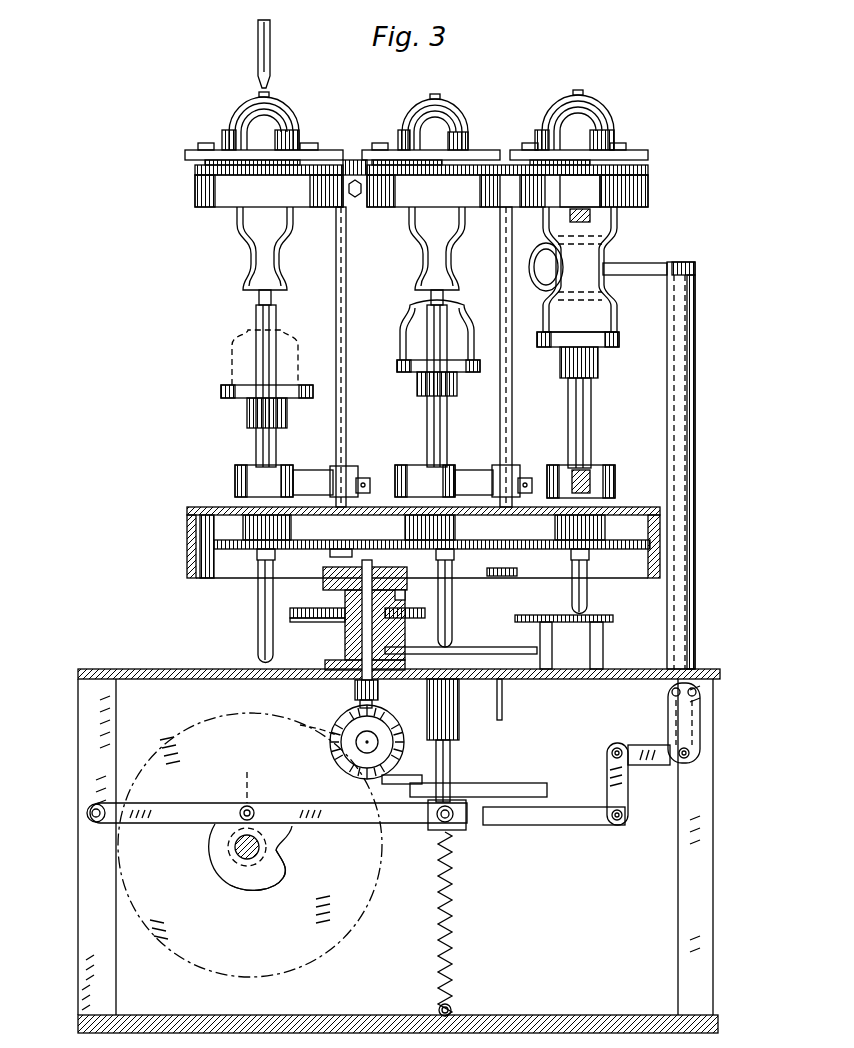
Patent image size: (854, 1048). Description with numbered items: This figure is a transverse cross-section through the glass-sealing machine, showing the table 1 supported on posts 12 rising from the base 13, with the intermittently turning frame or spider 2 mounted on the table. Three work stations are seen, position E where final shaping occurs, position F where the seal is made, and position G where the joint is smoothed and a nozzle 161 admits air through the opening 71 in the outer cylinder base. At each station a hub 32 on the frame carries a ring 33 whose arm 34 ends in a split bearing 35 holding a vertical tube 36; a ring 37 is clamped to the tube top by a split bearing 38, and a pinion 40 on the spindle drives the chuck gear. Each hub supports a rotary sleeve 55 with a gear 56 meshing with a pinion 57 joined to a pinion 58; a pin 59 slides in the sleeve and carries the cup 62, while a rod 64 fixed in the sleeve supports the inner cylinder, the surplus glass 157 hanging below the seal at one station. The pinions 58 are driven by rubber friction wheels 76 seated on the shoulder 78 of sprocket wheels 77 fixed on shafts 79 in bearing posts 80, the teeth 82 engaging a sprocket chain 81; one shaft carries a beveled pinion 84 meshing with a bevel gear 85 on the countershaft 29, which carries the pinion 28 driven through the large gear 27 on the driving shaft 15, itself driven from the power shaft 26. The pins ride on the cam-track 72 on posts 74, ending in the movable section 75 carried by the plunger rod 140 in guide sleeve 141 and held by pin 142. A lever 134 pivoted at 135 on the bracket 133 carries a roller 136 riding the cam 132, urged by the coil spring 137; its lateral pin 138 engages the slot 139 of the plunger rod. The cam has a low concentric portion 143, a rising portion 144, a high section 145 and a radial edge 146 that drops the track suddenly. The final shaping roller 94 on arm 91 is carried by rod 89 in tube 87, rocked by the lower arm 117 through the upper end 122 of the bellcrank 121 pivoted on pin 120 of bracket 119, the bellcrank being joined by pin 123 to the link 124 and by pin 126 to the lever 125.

The table 1 is at (183, 669).
The frame or spider 2 is at (190, 509).
The posts 12 is at (80, 748).
The base 13 is at (548, 1015).
The driving shaft 15 is at (262, 848).
The power shaft 26 is at (515, 780).
The gear 27 is at (372, 897).
The pinion 28 is at (330, 738).
The countershaft 29 is at (351, 760).
The hubs 32 is at (291, 523).
The sleeve or ring 33 is at (238, 478).
The arm 34 is at (312, 480).
The split bearing 35 is at (352, 470).
The tube 36 is at (592, 216).
The ring 37 is at (200, 192).
The split bearing 38 is at (196, 168).
The pinion 40 is at (352, 160).
The sleeve 55 is at (256, 436).
The gear 56 is at (212, 584).
The pinion 57 is at (330, 554).
The pinion 58 is at (510, 578).
The pin 59 is at (258, 625).
The cup 62 is at (221, 391).
The rod 64 is at (259, 298).
The opening 71 is at (271, 95).
The cam-track 72 is at (584, 622).
The posts 74 is at (603, 645).
The vertically movable section 75 is at (470, 648).
The friction wheels 76 is at (400, 580).
The sprocket wheels 77 is at (340, 614).
The annular flange or shoulder 78 is at (400, 592).
The shafts 79 is at (362, 630).
The bearing posts 80 is at (345, 646).
The sprocket chain 81 is at (330, 610).
The teeth 82 is at (388, 622).
The beveled pinion 84 is at (355, 690).
The bevel gear 85 is at (403, 784).
The upright tube 87 is at (695, 405).
The rod 89 is at (695, 348).
The arm 91 is at (658, 265).
The shaping roller 94 is at (530, 270).
The arm 117 is at (696, 698).
The bracket 119 is at (670, 710).
The pin 120 is at (690, 753).
The bellcrank 121 is at (656, 745).
The upper end of bellcrank 122 is at (700, 687).
The pin 123 is at (612, 752).
The link 124 is at (608, 786).
The lever 125 is at (590, 826).
The pin 126 is at (617, 822).
The cam 132 is at (233, 880).
The post or bracket 133 is at (78, 940).
The lever 134 is at (180, 804).
The pivot 135 is at (87, 815).
The roller 136 is at (261, 780).
The coil spring 137 is at (453, 915).
The lateral pin 138 is at (440, 820).
The slot 139 is at (455, 818).
The plunger rod 140 is at (450, 770).
The guide sleeve 141 is at (428, 700).
The pin 142 is at (502, 704).
The concentric portion 143 is at (255, 812).
The rising portion 144 is at (222, 844).
The high section 145 is at (258, 892).
The radial edge 146 is at (290, 862).
The surplus glass 157 is at (470, 336).
The nozzle 161 is at (258, 58).
The position G is at (232, 120).
The position F is at (460, 106).
The position E is at (608, 106).